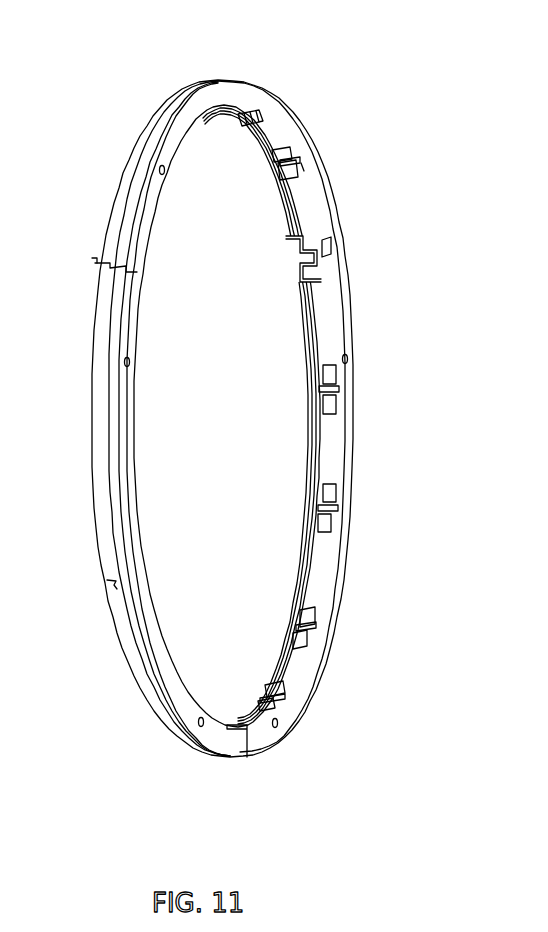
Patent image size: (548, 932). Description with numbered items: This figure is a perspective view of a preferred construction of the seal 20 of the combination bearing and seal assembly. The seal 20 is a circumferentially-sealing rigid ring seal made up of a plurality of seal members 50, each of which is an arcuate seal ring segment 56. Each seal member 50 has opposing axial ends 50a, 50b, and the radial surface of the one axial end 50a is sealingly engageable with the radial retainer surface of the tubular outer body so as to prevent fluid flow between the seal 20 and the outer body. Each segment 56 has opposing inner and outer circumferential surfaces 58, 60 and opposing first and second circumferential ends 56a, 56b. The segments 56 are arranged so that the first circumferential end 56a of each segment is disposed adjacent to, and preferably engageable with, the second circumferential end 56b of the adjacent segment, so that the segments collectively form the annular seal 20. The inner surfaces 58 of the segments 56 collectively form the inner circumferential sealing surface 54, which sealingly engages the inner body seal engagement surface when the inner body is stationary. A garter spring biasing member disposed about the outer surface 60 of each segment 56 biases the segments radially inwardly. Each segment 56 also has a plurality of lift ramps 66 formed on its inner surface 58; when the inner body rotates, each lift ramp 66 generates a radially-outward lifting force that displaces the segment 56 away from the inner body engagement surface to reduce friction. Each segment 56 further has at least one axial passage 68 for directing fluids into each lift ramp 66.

The seal 20 is at (408, 313).
The seal member 50 is at (106, 184).
The axial end 50a is at (272, 113).
The axial end 50b is at (157, 110).
The sealing surface 54 is at (332, 447).
The arcuate seal ring segment 56 is at (258, 86).
The first circumferential end 56a is at (330, 257).
The second circumferential end 56b is at (323, 234).
The inner circumferential surface 58 is at (263, 138).
The outer circumferential surface 60 is at (196, 78).
The lift ramp 66 is at (276, 154).
The axial passage 68 is at (338, 391).